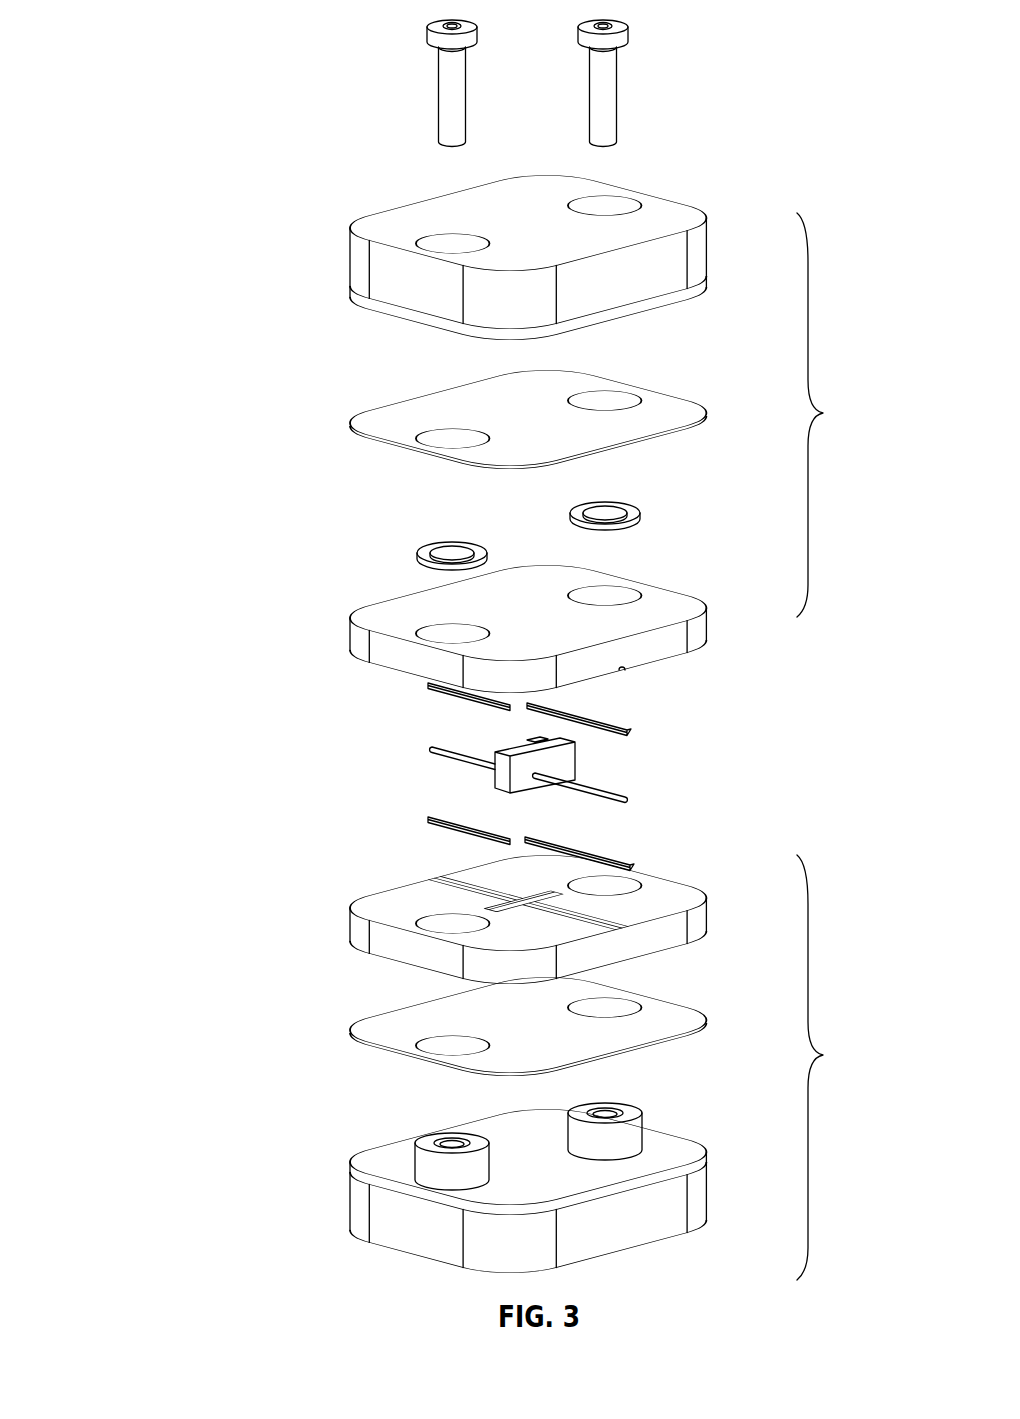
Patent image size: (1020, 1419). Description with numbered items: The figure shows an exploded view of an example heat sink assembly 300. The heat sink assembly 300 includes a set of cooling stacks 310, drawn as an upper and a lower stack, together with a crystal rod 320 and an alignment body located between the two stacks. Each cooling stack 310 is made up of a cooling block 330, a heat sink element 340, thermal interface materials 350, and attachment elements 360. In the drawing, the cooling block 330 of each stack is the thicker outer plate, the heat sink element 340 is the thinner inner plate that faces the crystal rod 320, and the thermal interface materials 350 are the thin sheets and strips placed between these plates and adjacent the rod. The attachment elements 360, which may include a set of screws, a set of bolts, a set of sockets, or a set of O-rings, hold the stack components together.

The heat sink assembly 300 is at (162, 38).
The cooling stack 310 is at (823, 413).
The crystal rod 320 is at (432, 749).
The cooling block 330 is at (350, 256).
The heat sink element 340 is at (350, 633).
The thermal interface materials 350 is at (350, 424).
The attachment elements 360 is at (437, 92).